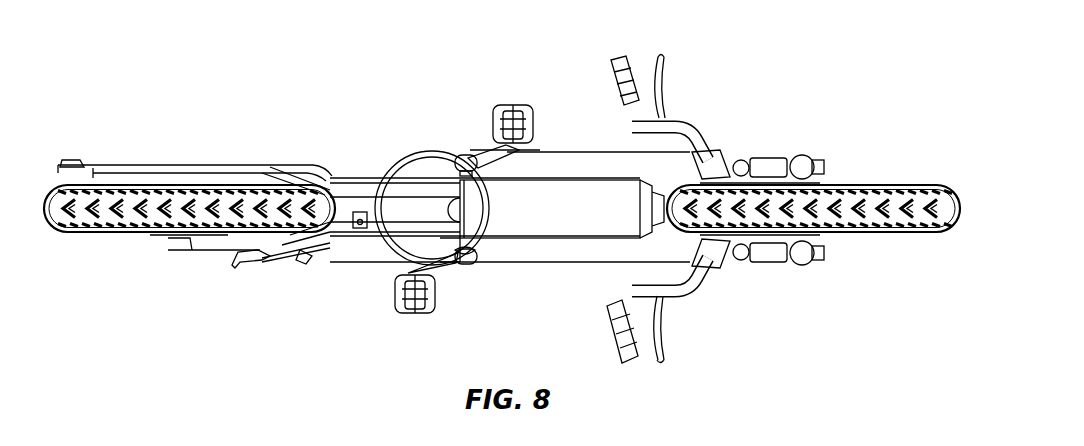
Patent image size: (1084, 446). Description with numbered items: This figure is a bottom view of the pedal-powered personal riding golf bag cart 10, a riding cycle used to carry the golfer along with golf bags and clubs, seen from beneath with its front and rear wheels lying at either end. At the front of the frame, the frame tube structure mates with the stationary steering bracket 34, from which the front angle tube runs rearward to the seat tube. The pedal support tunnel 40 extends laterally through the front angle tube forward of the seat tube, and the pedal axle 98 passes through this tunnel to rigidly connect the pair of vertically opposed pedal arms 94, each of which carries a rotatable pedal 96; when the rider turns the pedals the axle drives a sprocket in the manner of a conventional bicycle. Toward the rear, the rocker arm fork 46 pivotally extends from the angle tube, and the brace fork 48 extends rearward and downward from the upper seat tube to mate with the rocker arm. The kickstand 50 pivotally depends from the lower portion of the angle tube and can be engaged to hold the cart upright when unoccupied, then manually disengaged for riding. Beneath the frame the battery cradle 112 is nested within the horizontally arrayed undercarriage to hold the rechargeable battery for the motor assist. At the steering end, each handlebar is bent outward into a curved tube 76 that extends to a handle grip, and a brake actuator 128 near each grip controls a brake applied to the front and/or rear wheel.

The riding cart 10 is at (392, 52).
The steering bracket 34 is at (745, 256).
The pedal support tunnel 40 is at (493, 265).
The rocker arm fork 46 is at (292, 171).
The brace fork 48 is at (310, 262).
The kickstand 50 is at (240, 268).
The curved tube 76 is at (700, 291).
The pedal arms 94 is at (487, 150).
The pedal 96 is at (428, 311).
The pedal axle 98 is at (467, 221).
The battery cradle 112 is at (575, 224).
The brake actuator 128 is at (661, 73).